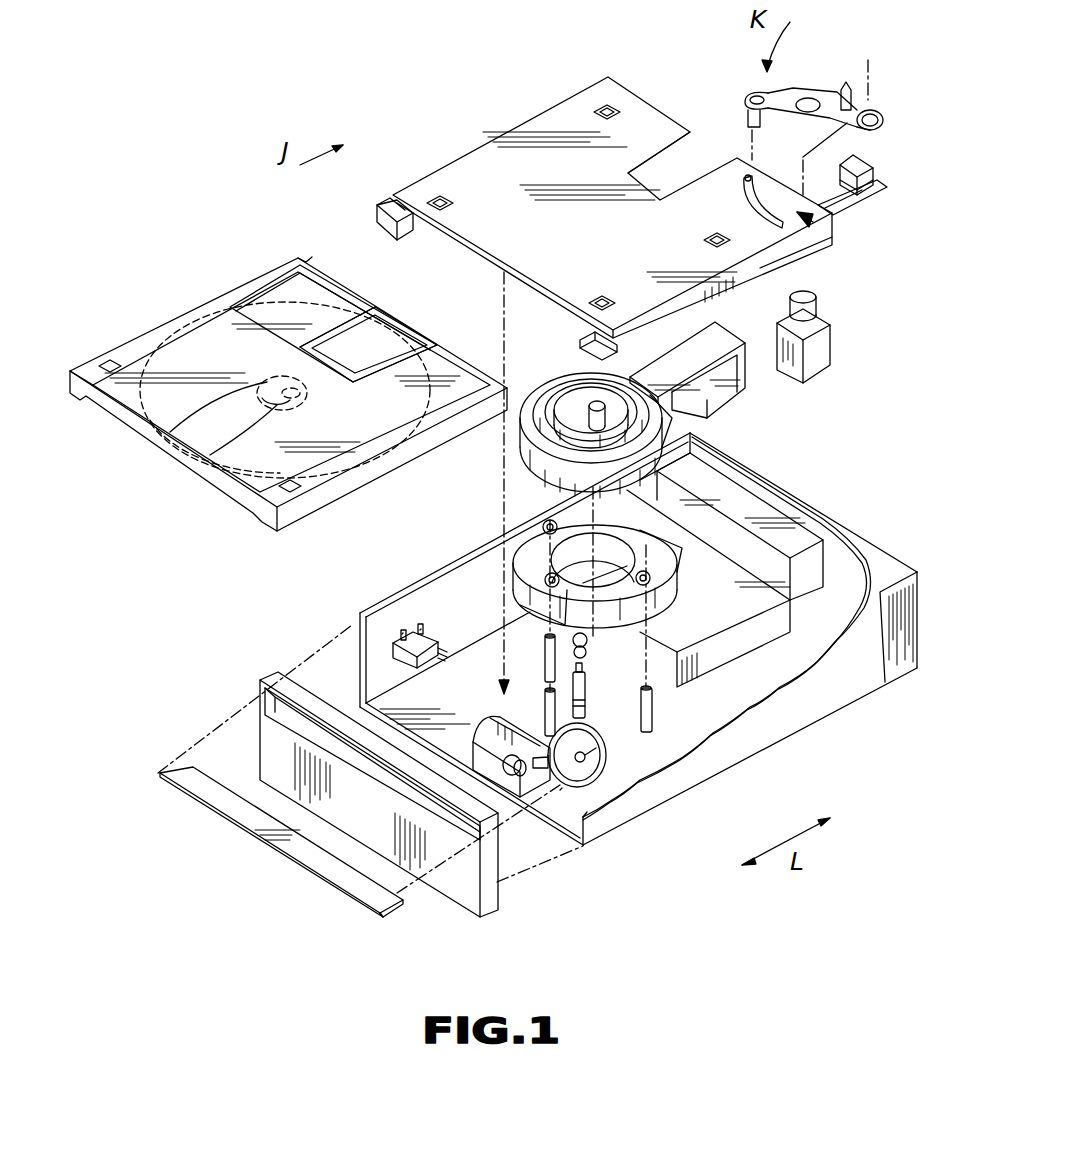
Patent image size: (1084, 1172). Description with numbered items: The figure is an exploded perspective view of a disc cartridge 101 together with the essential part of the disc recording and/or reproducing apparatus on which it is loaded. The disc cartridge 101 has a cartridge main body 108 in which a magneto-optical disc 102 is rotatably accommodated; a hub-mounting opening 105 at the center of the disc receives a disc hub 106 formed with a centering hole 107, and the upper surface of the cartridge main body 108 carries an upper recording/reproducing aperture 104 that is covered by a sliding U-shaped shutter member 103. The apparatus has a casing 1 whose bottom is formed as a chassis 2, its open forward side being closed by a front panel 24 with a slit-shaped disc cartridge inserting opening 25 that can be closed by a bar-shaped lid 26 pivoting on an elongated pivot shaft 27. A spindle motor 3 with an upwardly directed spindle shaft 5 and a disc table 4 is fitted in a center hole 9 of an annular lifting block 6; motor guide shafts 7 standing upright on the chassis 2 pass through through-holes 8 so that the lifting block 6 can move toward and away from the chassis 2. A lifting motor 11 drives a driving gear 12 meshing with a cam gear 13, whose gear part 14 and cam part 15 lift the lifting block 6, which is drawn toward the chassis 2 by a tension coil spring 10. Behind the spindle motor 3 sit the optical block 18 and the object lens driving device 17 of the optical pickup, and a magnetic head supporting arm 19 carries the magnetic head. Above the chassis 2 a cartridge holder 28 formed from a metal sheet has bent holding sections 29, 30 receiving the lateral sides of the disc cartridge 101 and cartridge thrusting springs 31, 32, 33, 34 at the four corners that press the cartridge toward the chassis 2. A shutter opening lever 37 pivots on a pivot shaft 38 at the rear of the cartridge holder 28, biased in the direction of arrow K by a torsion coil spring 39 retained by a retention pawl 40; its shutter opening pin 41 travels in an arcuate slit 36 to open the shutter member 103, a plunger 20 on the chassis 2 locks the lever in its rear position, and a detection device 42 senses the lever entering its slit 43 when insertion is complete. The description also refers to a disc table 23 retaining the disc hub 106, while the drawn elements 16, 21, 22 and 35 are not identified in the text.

The casing 1 is at (740, 760).
The chassis 2 is at (645, 785).
The spindle motor 3 is at (590, 410).
The disc table 4 is at (572, 396).
The spindle shaft 5 is at (592, 404).
The lifting block 6 is at (587, 566).
The motor guide shafts 7 is at (545, 662).
The through-holes 8 is at (543, 528).
The center hole 9 is at (623, 545).
The tension coil spring 10 is at (599, 602).
The lifting motor 11 is at (483, 722).
The driving gear 12 is at (528, 778).
The cam gear 13 is at (568, 792).
The gear part 14 is at (583, 732).
The cam part 15 is at (608, 747).
The gear hub 16 is at (593, 770).
The object lens driving device 17 is at (714, 662).
The optical block 18 is at (750, 510).
The magnetic head supporting arm 19 is at (747, 377).
The plunger 20 is at (835, 352).
The detection switch 21 is at (432, 645).
The lead wire 22 is at (403, 632).
The disc table 23 is at (421, 627).
The front panel 24 is at (498, 882).
The disc cartridge inserting opening 25 is at (305, 718).
The lid 26 is at (362, 884).
The pivot shaft 27 is at (392, 906).
The cartridge holder 28 is at (527, 112).
The holding section 29 is at (393, 215).
The holding section 30 is at (590, 333).
The cartridge thrusting spring 31 is at (607, 104).
The cartridge thrusting spring 32 is at (447, 197).
The cartridge thrusting spring 33 is at (606, 297).
The cartridge thrusting spring 34 is at (708, 238).
The cutout 35 is at (683, 157).
The arcuate slit 36 is at (748, 210).
The shutter opening lever 37 is at (818, 90).
The pivot shaft 38 is at (870, 105).
The torsion coil spring 39 is at (818, 146).
The retention pawl 40 is at (830, 221).
The shutter opening pin 41 is at (750, 112).
The detection device 42 is at (867, 170).
The slit 43 is at (875, 197).
The disc cartridge 101 is at (183, 306).
The magneto-optical disc 102 is at (357, 340).
The shutter member 103 is at (298, 290).
The upper recording/reproducing aperture 104 is at (383, 357).
The hub-mounting opening 105 is at (277, 403).
The disc hub 106 is at (147, 437).
The centering hole 107 is at (220, 310).
The cartridge main body 108 is at (130, 353).